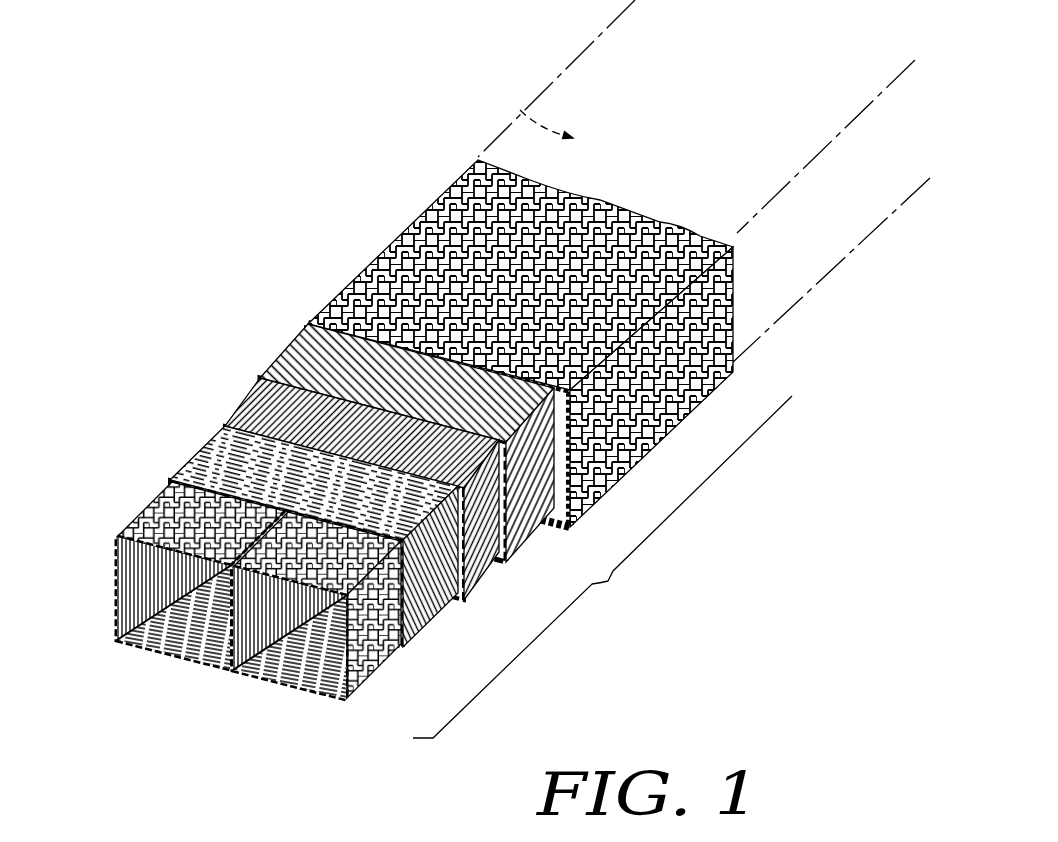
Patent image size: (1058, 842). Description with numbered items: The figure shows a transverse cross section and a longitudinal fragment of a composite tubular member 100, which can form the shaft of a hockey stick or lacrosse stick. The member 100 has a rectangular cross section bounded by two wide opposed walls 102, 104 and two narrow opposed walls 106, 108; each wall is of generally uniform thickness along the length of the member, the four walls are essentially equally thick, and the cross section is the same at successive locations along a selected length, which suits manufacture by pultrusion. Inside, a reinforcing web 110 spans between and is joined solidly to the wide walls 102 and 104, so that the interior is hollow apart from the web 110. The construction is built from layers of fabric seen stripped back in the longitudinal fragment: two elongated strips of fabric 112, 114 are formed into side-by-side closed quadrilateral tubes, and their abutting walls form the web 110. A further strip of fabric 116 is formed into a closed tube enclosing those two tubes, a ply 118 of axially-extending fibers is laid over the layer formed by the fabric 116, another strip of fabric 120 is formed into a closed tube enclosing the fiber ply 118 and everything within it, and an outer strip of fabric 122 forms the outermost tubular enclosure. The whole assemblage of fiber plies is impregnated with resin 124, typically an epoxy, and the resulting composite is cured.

The composite tubular member 100 is at (402, 416).
The wide wall 102 is at (592, 88).
The wide wall 104 is at (757, 250).
The narrow wall 106 is at (817, 193).
The narrow wall 108 is at (520, 110).
The web 110 is at (200, 635).
The strip of fabric 112 is at (150, 652).
The strip of fabric 114 is at (297, 698).
The strip of fabric 116 is at (210, 452).
The ply of axially-extending fibers 118 is at (247, 417).
The strip of fabric 120 is at (305, 355).
The strip of fabric 122 is at (420, 265).
The resin 124 is at (602, 567).